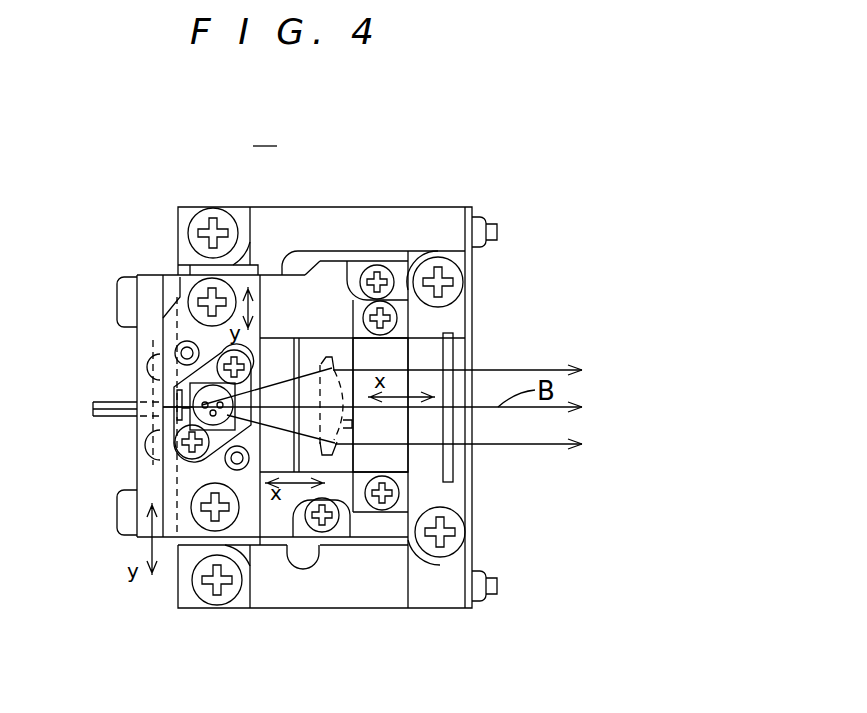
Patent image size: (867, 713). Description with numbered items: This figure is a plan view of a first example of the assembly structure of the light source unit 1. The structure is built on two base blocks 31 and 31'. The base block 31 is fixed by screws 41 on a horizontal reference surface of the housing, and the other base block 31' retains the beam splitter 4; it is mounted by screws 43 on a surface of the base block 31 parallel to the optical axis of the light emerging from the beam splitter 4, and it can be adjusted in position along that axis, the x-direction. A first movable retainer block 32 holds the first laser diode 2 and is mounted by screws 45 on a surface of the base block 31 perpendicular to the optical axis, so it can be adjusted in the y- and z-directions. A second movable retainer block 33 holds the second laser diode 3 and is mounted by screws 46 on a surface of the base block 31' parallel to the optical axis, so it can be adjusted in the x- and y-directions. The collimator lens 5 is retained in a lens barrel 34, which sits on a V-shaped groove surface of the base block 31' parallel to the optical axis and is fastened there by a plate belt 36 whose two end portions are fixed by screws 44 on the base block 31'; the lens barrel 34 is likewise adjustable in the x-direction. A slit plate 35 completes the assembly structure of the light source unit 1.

The light source unit 1 is at (265, 129).
The first laser diode 2 is at (150, 392).
The second laser diode 3 is at (207, 388).
The beam splitter 4 is at (213, 462).
The collimator lens 5 is at (362, 426).
The base block 31 is at (304, 371).
The base block 31' is at (322, 345).
The first movable retainer block 32 is at (138, 470).
The second movable retainer block 33 is at (173, 525).
The lens barrel 34 is at (428, 352).
The slit plate 35 is at (472, 492).
The plate belt 36 is at (395, 457).
The screws 41 is at (197, 222).
The screws 43 is at (377, 265).
The screws 44 is at (398, 320).
The screws 45 is at (117, 292).
The screws 46 is at (200, 298).